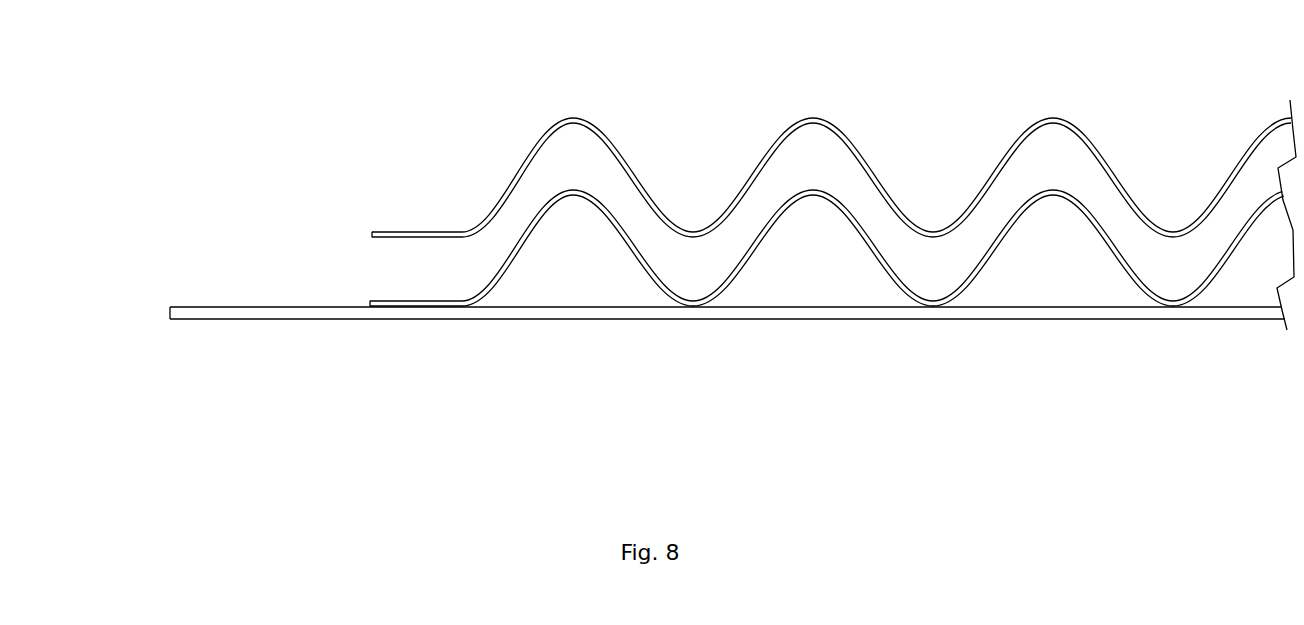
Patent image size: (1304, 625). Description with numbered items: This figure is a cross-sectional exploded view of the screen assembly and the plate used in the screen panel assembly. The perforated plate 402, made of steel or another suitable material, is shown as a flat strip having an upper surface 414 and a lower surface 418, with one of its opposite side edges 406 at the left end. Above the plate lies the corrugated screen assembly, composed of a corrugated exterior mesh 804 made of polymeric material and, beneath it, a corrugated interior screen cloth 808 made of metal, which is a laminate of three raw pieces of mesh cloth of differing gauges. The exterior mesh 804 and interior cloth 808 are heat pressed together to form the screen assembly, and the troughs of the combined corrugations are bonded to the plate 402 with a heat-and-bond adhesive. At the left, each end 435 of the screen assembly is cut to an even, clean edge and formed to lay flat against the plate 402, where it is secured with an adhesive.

The perforated plate 402 is at (678, 306).
The side edge 406 is at (170, 309).
The upper surface 414 is at (598, 308).
The lower surface 418 is at (577, 321).
The end of screen assembly 435 is at (417, 232).
The corrugated exterior mesh 804 is at (755, 167).
The corrugated interior screen cloth 808 is at (527, 218).